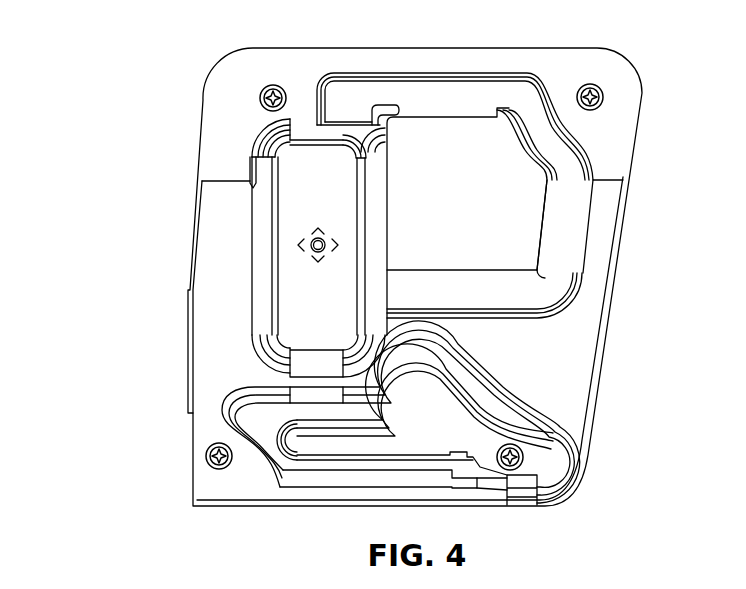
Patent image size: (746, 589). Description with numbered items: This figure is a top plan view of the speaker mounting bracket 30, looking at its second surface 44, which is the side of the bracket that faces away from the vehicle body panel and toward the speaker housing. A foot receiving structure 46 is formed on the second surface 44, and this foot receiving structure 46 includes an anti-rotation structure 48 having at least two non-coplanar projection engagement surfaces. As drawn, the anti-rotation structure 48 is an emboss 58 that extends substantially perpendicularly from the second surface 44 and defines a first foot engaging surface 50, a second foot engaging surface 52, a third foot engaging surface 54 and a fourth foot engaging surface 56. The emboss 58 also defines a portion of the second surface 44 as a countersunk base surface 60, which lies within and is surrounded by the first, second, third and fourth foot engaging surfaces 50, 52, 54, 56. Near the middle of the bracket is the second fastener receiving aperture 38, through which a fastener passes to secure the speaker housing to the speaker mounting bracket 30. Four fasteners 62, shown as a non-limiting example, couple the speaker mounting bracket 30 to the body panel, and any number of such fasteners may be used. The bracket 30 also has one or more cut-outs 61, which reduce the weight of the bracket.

The speaker mounting bracket 30 is at (625, 56).
The second surface 44 is at (247, 66).
The fasteners 62 is at (606, 95).
The cut-outs 61 is at (519, 258).
The second fastener receiving aperture 38 is at (332, 247).
The countersunk base surface 60 is at (306, 180).
The emboss 58 is at (262, 206).
The first foot engaging surface 50 is at (335, 143).
The second foot engaging surface 52 is at (282, 262).
The third foot engaging surface 54 is at (360, 313).
The fourth foot engaging surface 56 is at (303, 348).
The foot receiving structure 46 is at (75, 163).
The anti-rotation structure 48 is at (128, 205).